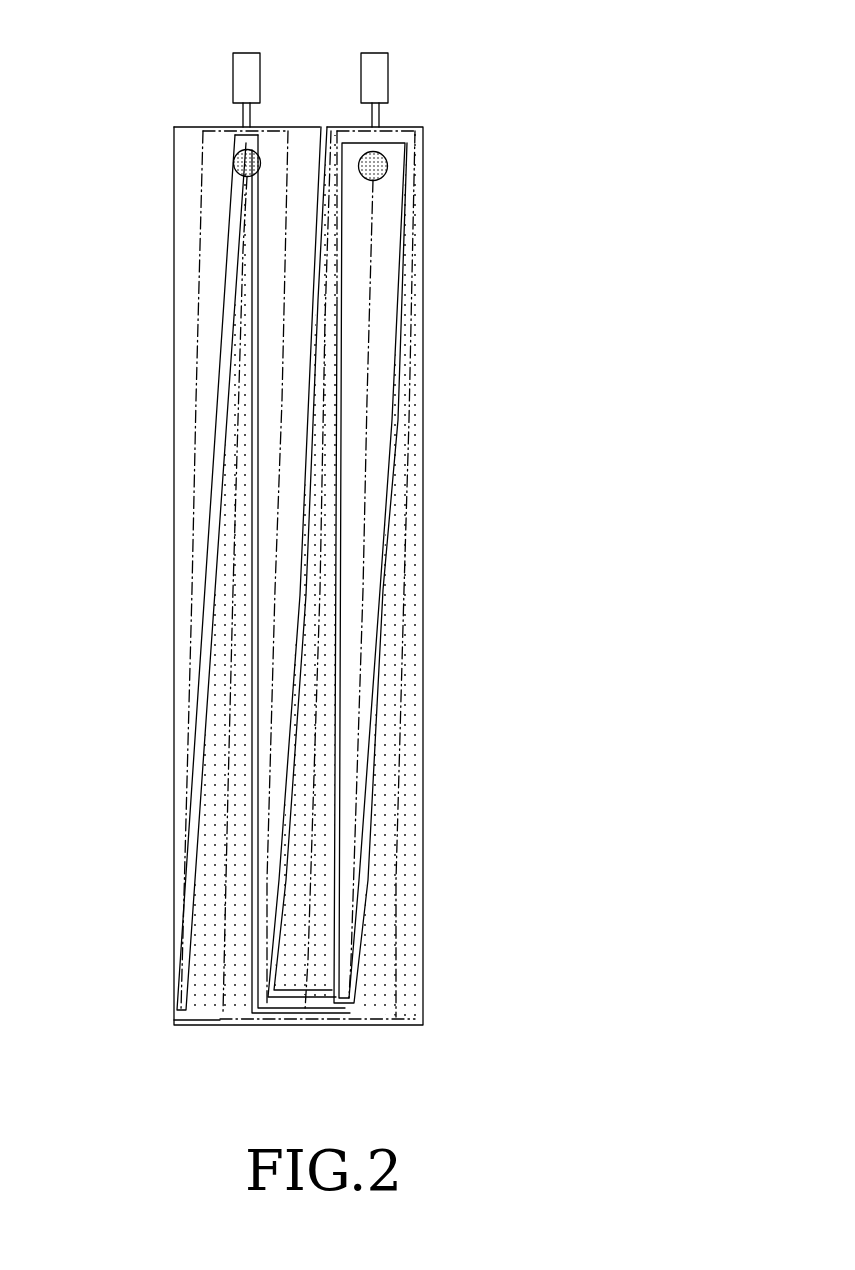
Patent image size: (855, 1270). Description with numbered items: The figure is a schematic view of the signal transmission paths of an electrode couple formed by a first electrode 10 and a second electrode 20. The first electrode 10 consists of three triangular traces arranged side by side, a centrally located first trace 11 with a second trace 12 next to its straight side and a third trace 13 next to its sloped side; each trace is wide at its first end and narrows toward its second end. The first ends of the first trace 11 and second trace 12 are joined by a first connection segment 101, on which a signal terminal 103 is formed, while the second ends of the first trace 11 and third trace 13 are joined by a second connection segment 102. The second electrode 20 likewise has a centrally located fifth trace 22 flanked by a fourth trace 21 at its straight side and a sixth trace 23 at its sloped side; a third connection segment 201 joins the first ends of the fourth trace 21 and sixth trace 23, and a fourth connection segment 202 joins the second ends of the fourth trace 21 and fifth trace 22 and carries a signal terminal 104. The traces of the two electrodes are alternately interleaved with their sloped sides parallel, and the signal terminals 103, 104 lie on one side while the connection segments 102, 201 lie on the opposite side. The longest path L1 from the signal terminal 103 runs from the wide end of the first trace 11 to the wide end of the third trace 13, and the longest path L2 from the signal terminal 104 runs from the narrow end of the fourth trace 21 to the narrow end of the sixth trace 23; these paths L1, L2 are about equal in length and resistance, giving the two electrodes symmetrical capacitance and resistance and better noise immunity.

The first electrode 10 is at (156, 134).
The first trace 11 is at (297, 145).
The second trace 12 is at (181, 556).
The third trace 13 is at (383, 358).
The second electrode 20 is at (433, 1042).
The fourth trace 21 is at (411, 806).
The fifth trace 22 is at (319, 994).
The sixth trace 23 is at (210, 978).
The first connection segment 101 is at (241, 128).
The second connection segment 102 is at (333, 1008).
The signal terminal 103 is at (246, 53).
The signal terminal 104 is at (383, 60).
The third connection segment 201 is at (267, 1026).
The fourth connection segment 202 is at (404, 128).
The longest signal transmission path of the signal terminal of the first electrode L1 is at (372, 256).
The longest signal transmission path of the signal terminal of the second electrode L2 is at (242, 365).